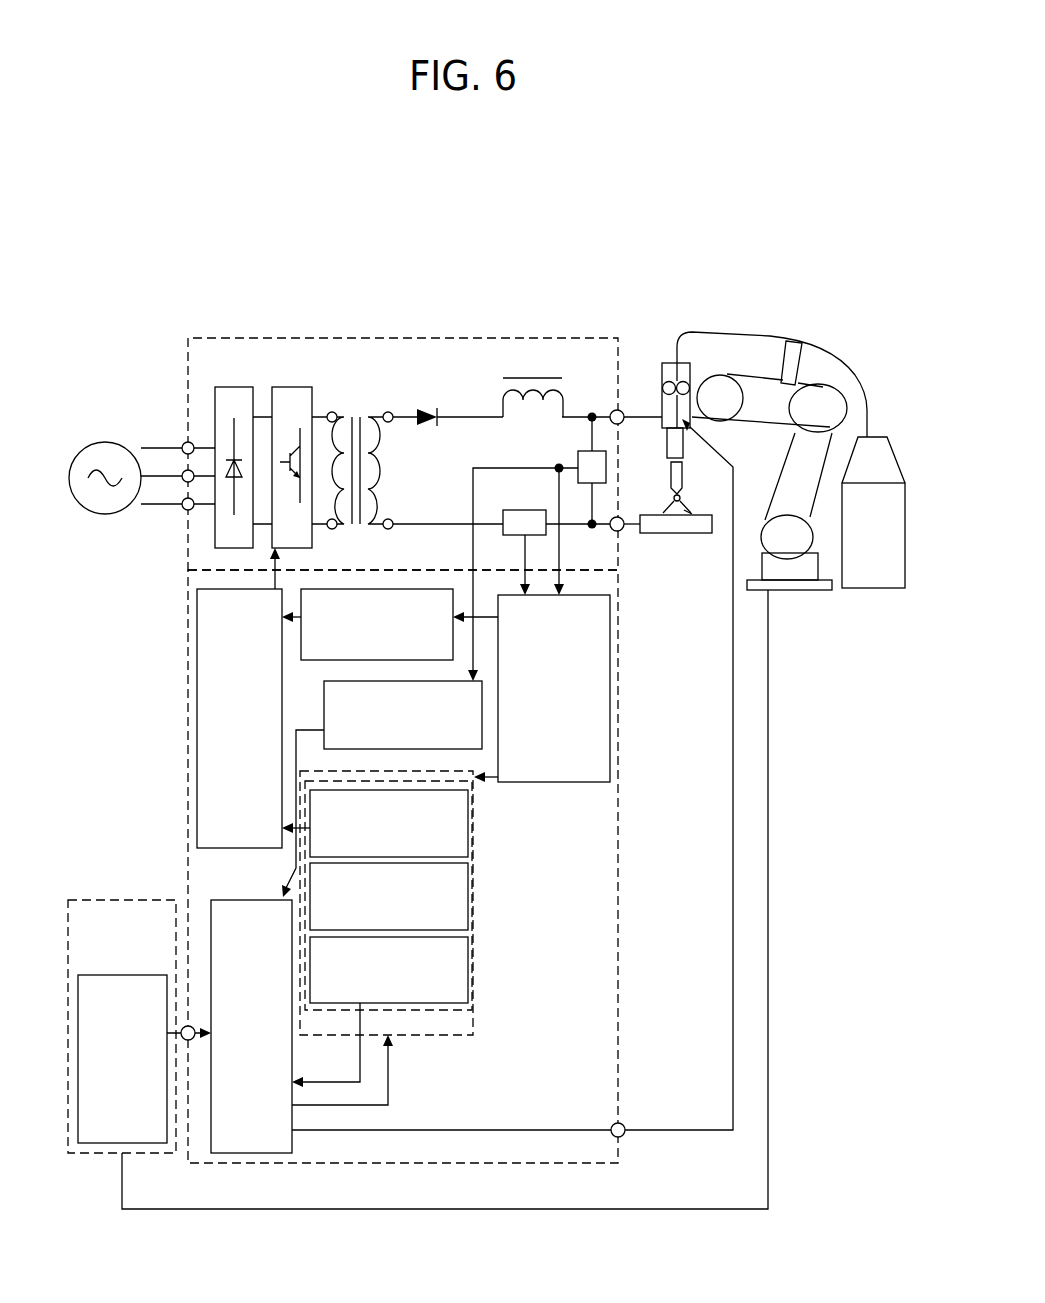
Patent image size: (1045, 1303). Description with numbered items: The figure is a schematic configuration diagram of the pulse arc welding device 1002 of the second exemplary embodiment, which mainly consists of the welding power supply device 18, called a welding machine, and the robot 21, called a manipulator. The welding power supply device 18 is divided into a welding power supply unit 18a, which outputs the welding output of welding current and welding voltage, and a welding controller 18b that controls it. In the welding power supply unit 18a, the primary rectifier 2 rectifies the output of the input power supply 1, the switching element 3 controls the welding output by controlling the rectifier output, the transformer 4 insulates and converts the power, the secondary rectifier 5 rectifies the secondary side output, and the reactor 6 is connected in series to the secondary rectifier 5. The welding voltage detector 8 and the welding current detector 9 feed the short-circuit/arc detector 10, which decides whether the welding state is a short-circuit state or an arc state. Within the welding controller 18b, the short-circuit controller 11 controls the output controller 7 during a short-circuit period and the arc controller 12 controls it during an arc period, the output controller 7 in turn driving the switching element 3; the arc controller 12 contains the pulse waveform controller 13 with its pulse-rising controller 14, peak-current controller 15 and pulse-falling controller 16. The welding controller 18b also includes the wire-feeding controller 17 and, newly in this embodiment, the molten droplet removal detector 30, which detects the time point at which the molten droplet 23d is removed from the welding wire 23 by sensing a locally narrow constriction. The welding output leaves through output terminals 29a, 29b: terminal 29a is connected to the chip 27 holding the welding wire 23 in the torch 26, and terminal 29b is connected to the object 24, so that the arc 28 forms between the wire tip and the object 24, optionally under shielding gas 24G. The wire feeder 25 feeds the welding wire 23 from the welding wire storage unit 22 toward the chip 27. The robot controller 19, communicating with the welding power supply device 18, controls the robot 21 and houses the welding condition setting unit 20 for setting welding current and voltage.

The input power supply 1 is at (100, 442).
The primary rectifier 2 is at (232, 387).
The switching element 3 is at (288, 387).
The transformer 4 is at (360, 411).
The secondary rectifier 5 is at (428, 402).
The reactor 6 is at (530, 373).
The output controller 7 is at (195, 620).
The welding voltage detector 8 is at (577, 459).
The welding current detector 9 is at (527, 507).
The short-circuit/arc detector 10 is at (613, 649).
The short-circuit controller 11 is at (337, 588).
The arc controller 12 is at (473, 1027).
The pulse waveform controller 13 is at (473, 795).
The pulse-rising controller 14 is at (473, 828).
The peak-current controller 15 is at (473, 897).
The pulse-falling controller 16 is at (473, 967).
The wire-feeding controller 17 is at (257, 898).
The welding power supply device 18 is at (371, 726).
The welding power supply unit 18a is at (187, 390).
The welding controller 18b is at (187, 685).
The robot controller 19 is at (96, 898).
The welding condition setting unit 20 is at (122, 973).
The robot 21 is at (786, 552).
The welding wire storage unit 22 is at (872, 590).
The welding wire 23 is at (712, 327).
The molten droplet 23d is at (674, 496).
The object 24 is at (700, 536).
The shielding gas 24G is at (688, 513).
The wire feeder 25 is at (665, 370).
The torch 26 is at (662, 417).
The chip 27 is at (667, 444).
The arc 28 is at (665, 510).
The output terminal 29a is at (613, 410).
The output terminal 29b is at (620, 532).
The molten droplet removal detector 30 is at (324, 698).
The pulse arc welding device 1002 is at (716, 238).